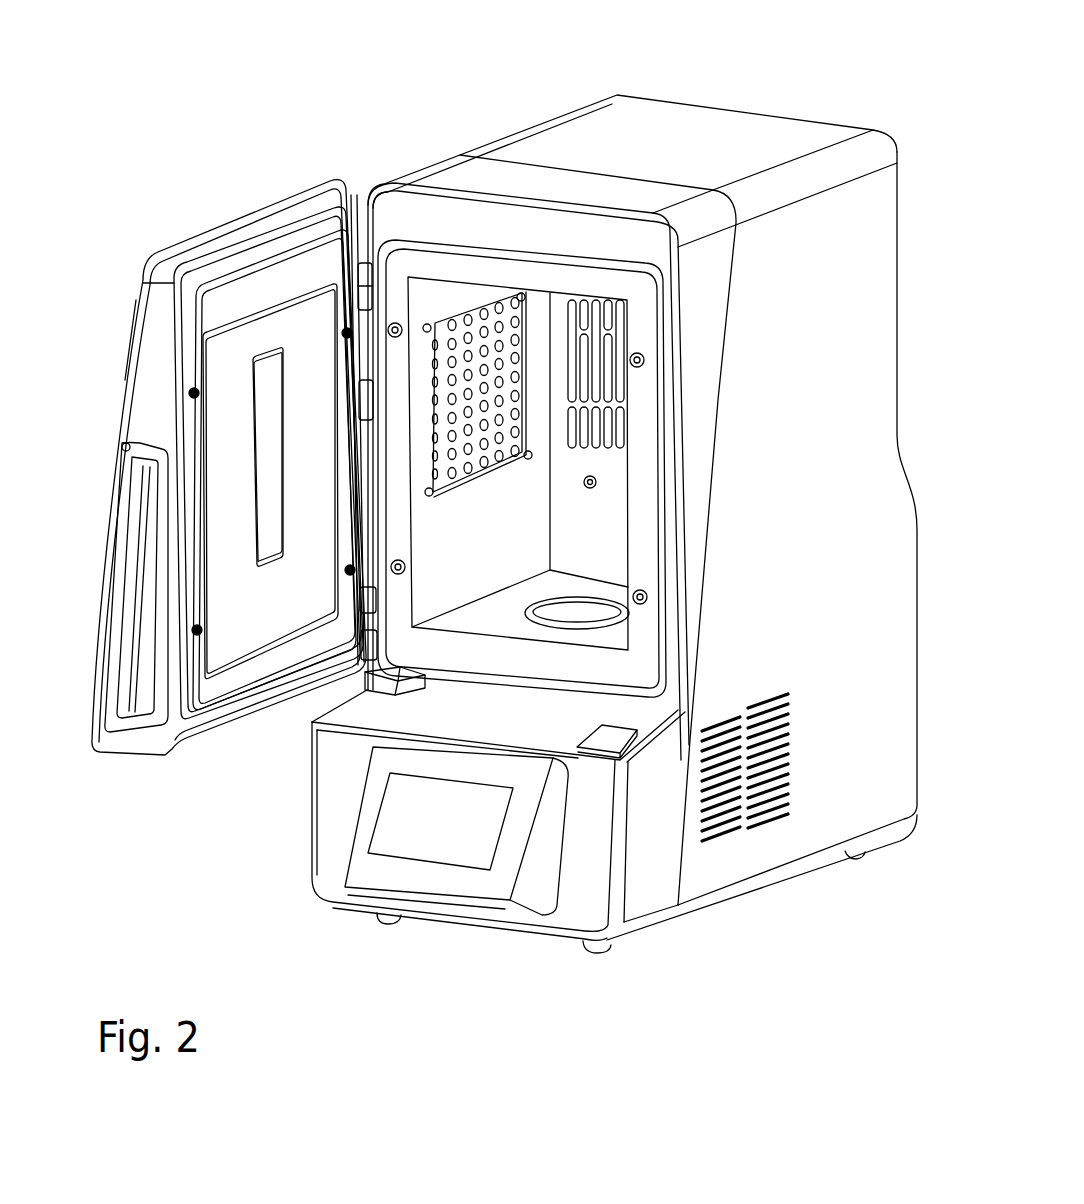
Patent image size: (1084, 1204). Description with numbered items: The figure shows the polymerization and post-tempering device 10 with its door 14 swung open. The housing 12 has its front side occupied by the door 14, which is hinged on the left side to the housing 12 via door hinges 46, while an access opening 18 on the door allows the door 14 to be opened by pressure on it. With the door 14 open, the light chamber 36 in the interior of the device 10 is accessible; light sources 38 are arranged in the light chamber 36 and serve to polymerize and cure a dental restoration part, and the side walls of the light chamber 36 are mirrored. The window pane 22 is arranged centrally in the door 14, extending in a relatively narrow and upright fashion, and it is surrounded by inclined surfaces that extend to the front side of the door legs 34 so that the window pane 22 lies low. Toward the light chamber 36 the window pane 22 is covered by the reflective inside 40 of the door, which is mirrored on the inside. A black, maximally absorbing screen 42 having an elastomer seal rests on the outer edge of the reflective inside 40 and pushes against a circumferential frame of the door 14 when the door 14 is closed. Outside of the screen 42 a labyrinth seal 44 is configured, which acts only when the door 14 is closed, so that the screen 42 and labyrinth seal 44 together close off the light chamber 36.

The polymerization and post-tempering device 10 is at (506, 89).
The housing 12 is at (831, 792).
The door 14 is at (268, 211).
The access opening 18 is at (138, 678).
The window pane 22 is at (260, 425).
The door legs 34 is at (153, 332).
The light chamber 36 is at (587, 525).
The light sources 38 is at (458, 337).
The reflective inside of the door 40 is at (230, 582).
The screen 42 is at (336, 207).
The labyrinth seal 44 is at (230, 275).
The door hinges 46 is at (360, 590).